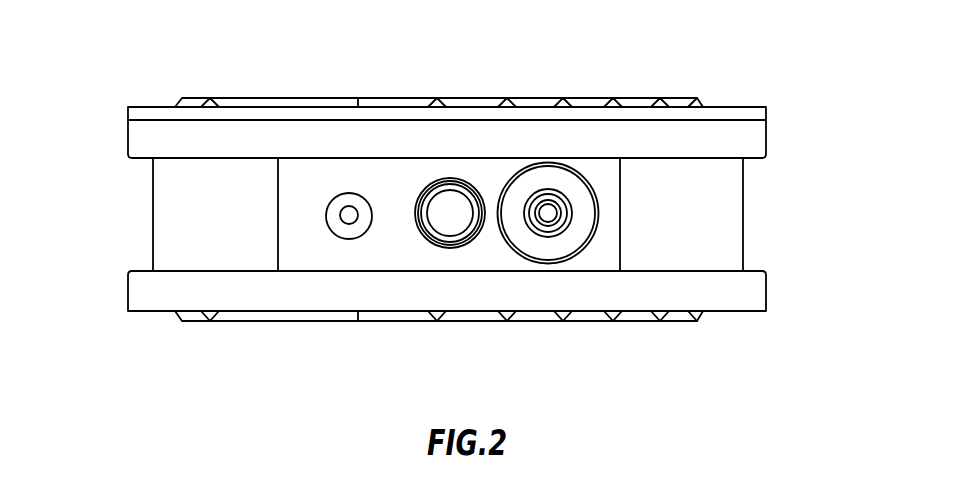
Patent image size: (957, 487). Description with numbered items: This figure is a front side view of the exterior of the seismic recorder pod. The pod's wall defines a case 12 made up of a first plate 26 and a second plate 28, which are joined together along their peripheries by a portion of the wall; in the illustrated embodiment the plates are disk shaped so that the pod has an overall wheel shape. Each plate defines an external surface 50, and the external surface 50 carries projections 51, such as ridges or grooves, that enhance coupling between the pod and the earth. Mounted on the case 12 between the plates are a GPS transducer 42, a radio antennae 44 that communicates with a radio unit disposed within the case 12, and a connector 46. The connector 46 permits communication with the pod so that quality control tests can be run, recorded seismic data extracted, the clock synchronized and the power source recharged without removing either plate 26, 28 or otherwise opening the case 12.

The case 12 is at (501, 190).
The second plate 28 is at (742, 107).
The first plate 26 is at (750, 311).
The external surface 50 is at (417, 212).
The projections 51 is at (561, 100).
The radio antennae 44 is at (349, 225).
The GPS transducer 42 is at (450, 220).
The connector 46 is at (548, 213).